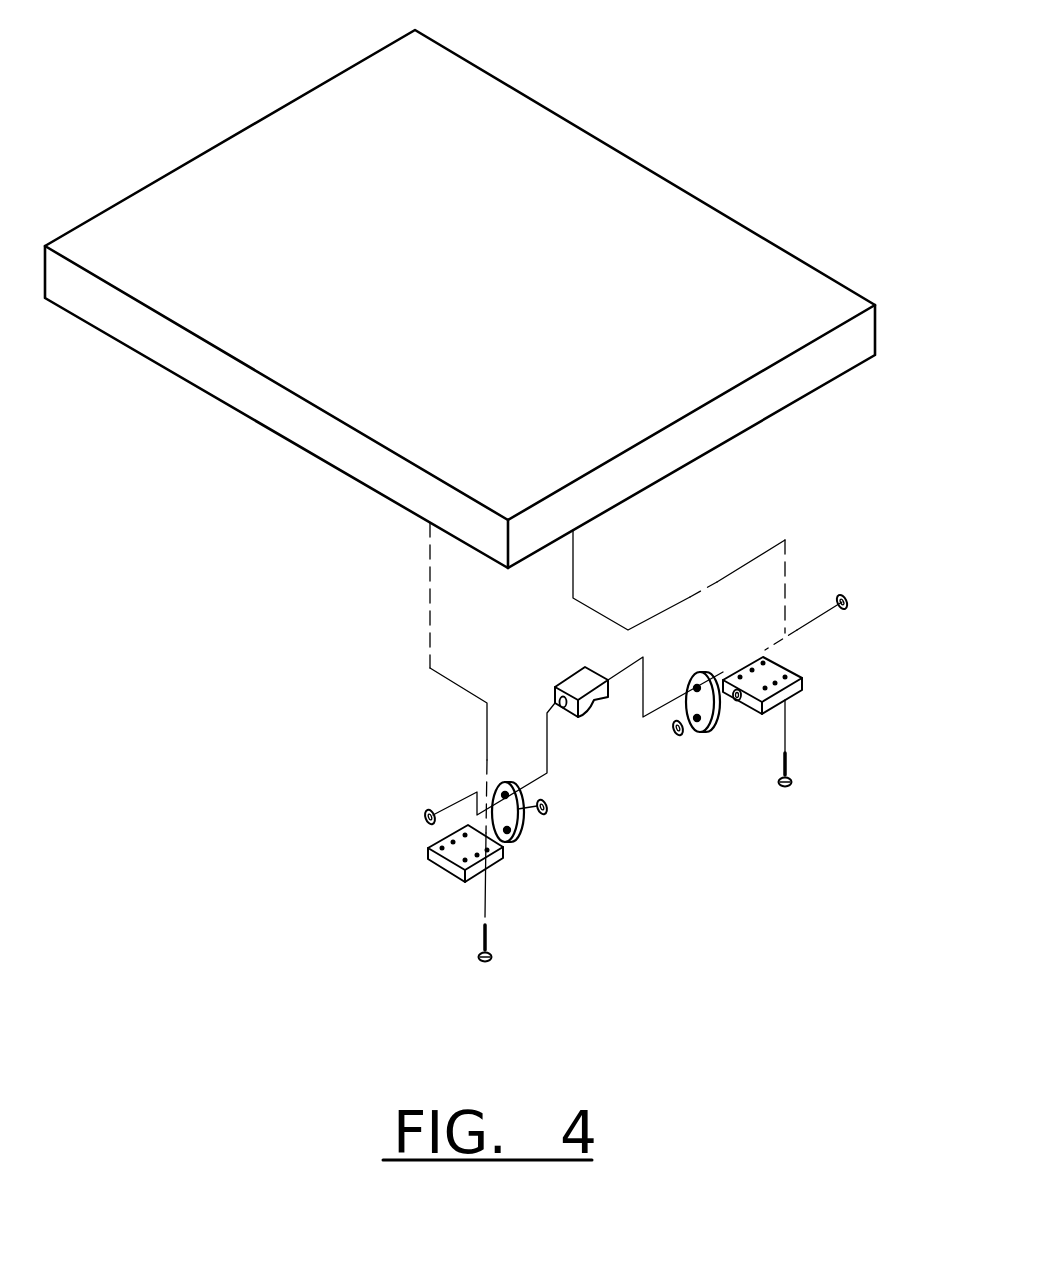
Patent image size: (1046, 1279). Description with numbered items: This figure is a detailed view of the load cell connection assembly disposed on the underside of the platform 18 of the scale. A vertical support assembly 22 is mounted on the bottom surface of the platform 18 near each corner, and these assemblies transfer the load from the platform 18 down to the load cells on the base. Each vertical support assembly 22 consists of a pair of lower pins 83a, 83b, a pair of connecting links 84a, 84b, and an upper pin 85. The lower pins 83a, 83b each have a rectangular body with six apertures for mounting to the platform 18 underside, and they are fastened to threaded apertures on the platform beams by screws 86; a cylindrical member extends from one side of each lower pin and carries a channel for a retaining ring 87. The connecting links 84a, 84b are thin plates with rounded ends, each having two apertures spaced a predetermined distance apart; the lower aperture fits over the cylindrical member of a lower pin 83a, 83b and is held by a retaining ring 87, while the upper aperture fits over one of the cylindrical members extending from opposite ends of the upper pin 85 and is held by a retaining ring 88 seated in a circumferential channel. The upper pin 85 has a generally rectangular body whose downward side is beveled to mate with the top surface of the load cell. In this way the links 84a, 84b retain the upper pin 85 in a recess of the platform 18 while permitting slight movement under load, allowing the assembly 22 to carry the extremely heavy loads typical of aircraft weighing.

The platform 18 is at (562, 105).
The vertical support assembly 22 is at (780, 847).
The lower pin 83a is at (446, 876).
The lower pin 83b is at (807, 670).
The connecting link 84a is at (523, 848).
The connecting link 84b is at (716, 743).
The upper pin 85 is at (592, 716).
The screw 86 is at (492, 942).
The retaining ring 87 is at (548, 810).
The retaining ring 88 is at (428, 812).